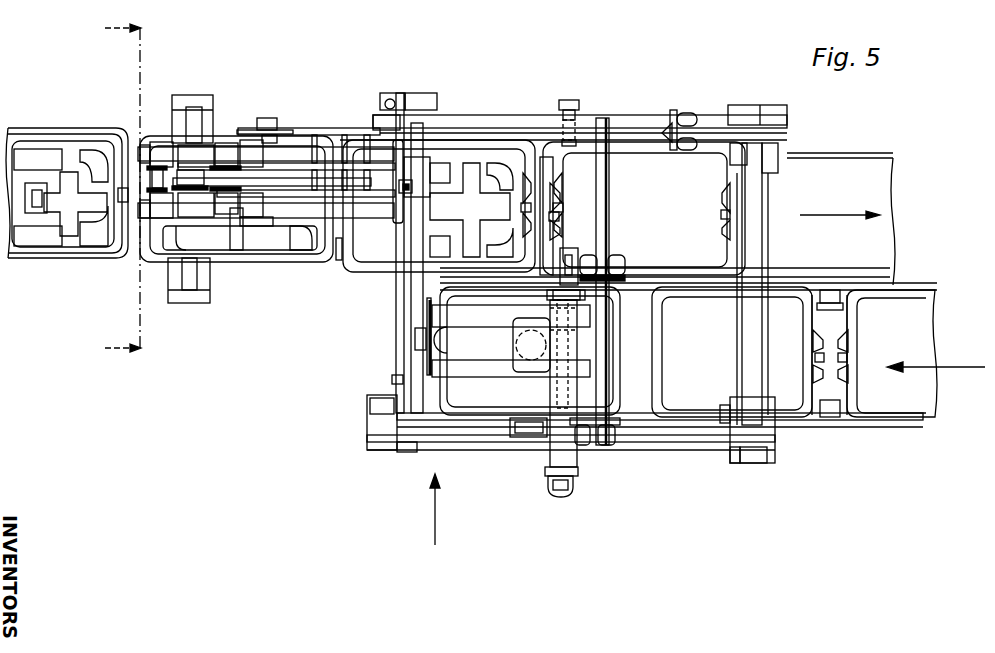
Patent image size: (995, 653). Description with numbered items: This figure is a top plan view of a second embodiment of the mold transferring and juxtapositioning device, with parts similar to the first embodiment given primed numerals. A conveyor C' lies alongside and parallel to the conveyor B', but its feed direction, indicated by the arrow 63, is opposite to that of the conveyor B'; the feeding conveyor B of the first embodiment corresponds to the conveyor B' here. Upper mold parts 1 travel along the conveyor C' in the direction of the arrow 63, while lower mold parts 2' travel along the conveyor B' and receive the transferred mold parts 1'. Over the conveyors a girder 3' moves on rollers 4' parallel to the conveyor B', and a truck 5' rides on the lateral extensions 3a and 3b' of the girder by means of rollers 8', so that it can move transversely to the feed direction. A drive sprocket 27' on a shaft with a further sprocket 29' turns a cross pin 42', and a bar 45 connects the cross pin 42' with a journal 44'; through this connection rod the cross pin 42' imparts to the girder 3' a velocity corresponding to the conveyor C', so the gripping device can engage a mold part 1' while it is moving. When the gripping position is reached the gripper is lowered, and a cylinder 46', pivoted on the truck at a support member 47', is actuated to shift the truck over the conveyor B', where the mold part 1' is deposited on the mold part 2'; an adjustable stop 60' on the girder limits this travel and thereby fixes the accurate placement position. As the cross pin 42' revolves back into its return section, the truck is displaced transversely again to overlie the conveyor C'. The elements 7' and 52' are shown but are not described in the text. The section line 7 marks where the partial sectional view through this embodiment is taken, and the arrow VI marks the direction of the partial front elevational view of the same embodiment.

The upper mold part 1 is at (892, 381).
The mold part 1' is at (615, 384).
The lower mold part 2' is at (67, 170).
The girder 3' is at (563, 104).
The lateral extension 3a is at (425, 295).
The lateral extension 3b' is at (635, 281).
The roller 4' is at (389, 98).
The truck 5' is at (486, 351).
The section line 7- 7 is at (119, 178).
The clamp 7' is at (484, 353).
The roller 8' is at (617, 244).
The sprocket 27' is at (245, 128).
The sprocket 29' is at (243, 198).
The cross pin 42' is at (203, 140).
The journal 44' is at (442, 244).
The bar 45 is at (273, 173).
The cylinder 46' is at (534, 398).
The support member 47' is at (549, 527).
The stop 52' is at (365, 391).
The adjustable stop 60' is at (584, 94).
The arrow 63 is at (936, 359).
The feeding conveyor B is at (333, 283).
The conveyor B' is at (841, 194).
The conveyor C' is at (829, 393).
The view direction VI is at (447, 571).